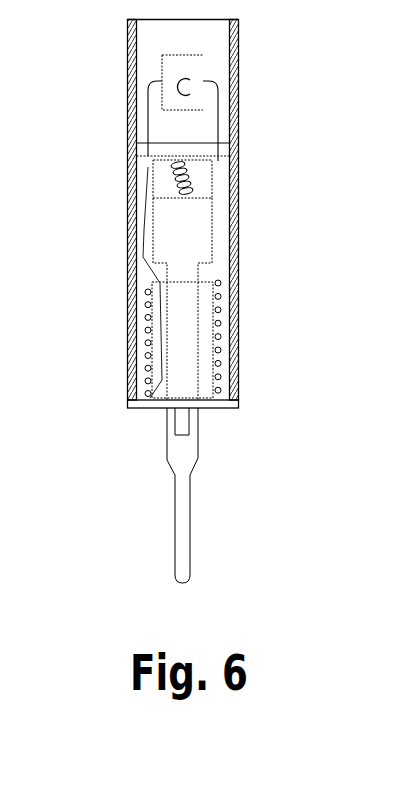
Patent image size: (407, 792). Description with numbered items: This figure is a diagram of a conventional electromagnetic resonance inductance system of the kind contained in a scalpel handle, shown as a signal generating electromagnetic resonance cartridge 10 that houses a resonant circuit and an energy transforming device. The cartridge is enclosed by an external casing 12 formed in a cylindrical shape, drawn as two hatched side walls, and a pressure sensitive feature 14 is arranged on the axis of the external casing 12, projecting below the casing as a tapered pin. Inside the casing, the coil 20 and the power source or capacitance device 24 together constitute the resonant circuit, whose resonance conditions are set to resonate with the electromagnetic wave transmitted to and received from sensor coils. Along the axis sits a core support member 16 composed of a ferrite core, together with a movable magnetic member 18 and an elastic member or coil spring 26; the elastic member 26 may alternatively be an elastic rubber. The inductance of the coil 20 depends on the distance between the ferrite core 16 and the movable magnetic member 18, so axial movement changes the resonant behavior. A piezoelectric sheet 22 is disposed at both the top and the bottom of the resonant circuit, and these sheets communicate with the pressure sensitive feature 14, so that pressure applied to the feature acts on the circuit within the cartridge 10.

The signal generating electromagnetic resonance cartridge 10 is at (100, 193).
The external casing 12 is at (128, 125).
The pressure sensitive feature 14 is at (178, 450).
The core support member 16 is at (197, 332).
The movable magnetic member 18 is at (185, 415).
The coil 20 is at (221, 290).
The piezoelectric sheet 22 is at (227, 147).
The capacitance device 24 is at (192, 72).
The coil spring 26 is at (192, 178).